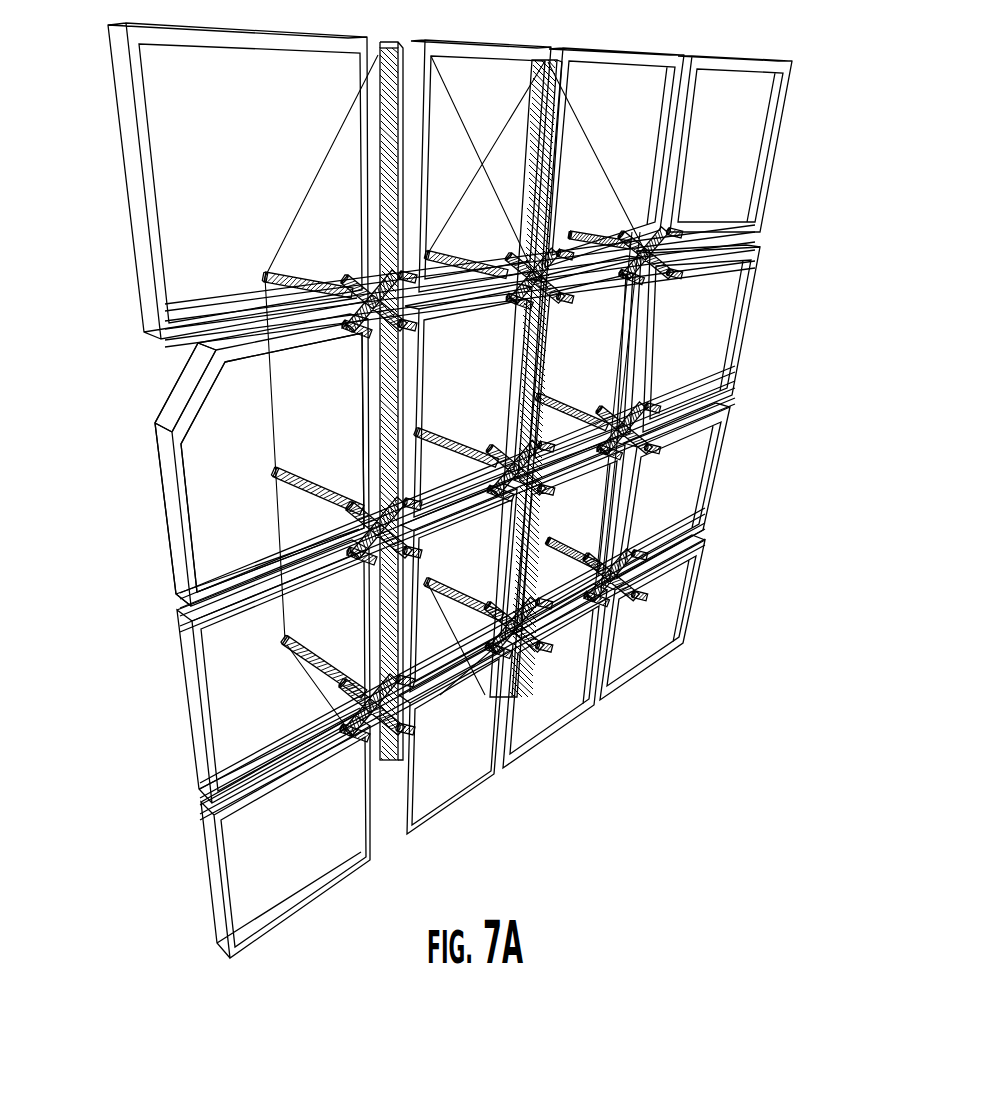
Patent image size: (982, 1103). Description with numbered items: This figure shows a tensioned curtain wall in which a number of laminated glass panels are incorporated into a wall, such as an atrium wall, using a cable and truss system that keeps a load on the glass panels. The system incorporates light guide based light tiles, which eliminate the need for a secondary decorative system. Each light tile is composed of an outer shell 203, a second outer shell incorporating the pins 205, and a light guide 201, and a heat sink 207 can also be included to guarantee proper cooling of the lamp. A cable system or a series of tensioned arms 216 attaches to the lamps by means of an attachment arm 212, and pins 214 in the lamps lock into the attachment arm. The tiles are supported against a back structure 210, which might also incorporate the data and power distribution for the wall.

The light guide 201 is at (188, 410).
The outer shell 203 is at (165, 458).
The second outer shell incorporating the pins 205 is at (217, 507).
The heat sink 207 is at (130, 182).
The back structure 210 is at (548, 170).
The attachment arm 212 is at (752, 248).
The pins 214 is at (667, 430).
The tensioned arms 216 is at (287, 652).